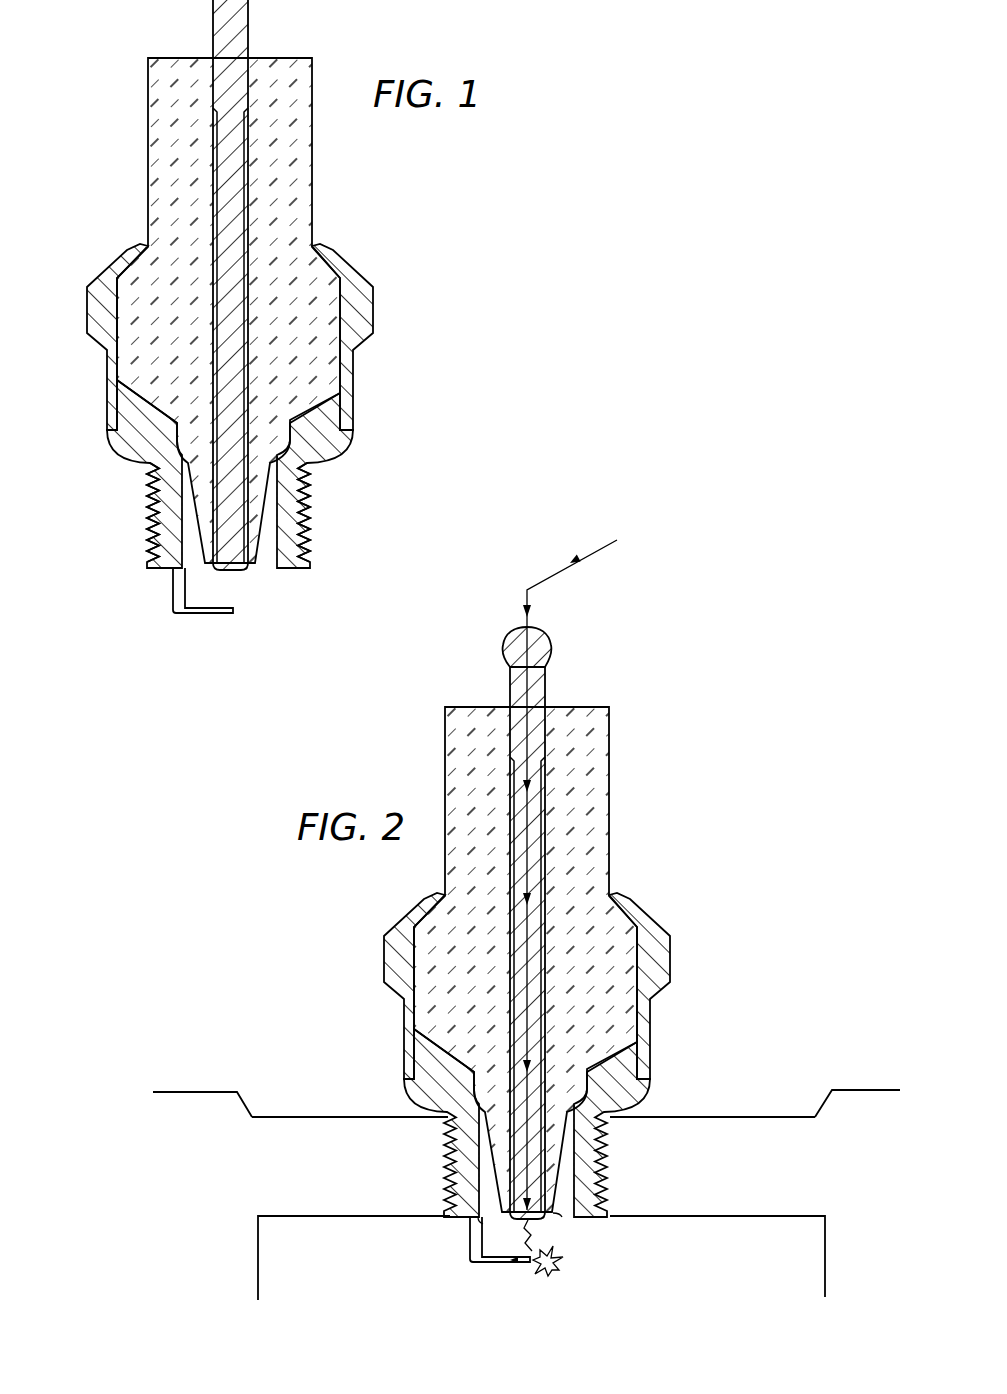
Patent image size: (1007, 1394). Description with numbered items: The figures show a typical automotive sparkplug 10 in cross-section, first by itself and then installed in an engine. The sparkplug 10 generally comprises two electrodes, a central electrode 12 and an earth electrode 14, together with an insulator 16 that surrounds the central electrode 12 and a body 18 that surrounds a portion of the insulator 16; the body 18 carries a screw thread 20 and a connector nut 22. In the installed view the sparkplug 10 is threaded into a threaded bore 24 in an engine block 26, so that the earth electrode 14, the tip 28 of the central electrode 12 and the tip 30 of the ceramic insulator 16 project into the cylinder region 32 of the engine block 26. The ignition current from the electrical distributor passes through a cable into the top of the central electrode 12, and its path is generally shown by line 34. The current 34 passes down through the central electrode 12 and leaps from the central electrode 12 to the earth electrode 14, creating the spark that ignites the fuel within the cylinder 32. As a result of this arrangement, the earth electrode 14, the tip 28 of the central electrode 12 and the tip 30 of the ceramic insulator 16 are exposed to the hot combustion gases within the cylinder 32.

In FIG. 2, the sparkplug 10 is at (627, 697).
In FIG. 1, the central electrode 12 is at (252, 50).
In FIG. 2, the central electrode 12 is at (540, 813).
In FIG. 1, the earth electrode 14 is at (217, 617).
In FIG. 2, the earth electrode 14 is at (495, 1265).
In FIG. 1, the insulator 16 is at (165, 212).
In FIG. 2, the insulator 16 is at (593, 862).
In FIG. 1, the body 18 is at (131, 423).
In FIG. 1, the screw thread 20 is at (167, 517).
In FIG. 1, the connector nut 22 is at (397, 287).
In FIG. 2, the threaded bore 24 is at (613, 1198).
In FIG. 2, the engine block 26 is at (718, 1174).
In FIG. 2, the tip of the central electrode 28 is at (540, 1221).
In FIG. 2, the tip of the ceramic insulator 30 is at (560, 1213).
In FIG. 2, the cylinder region 32 is at (325, 1298).
In FIG. 2, the current path line 34 is at (410, 1205).